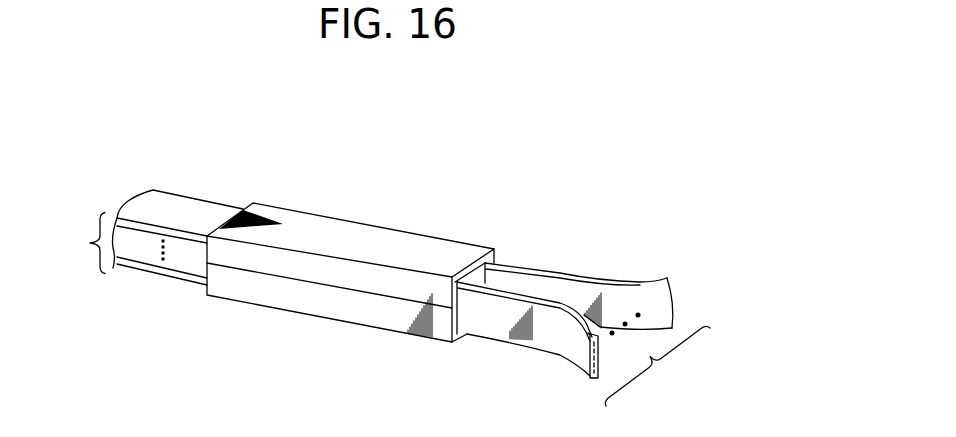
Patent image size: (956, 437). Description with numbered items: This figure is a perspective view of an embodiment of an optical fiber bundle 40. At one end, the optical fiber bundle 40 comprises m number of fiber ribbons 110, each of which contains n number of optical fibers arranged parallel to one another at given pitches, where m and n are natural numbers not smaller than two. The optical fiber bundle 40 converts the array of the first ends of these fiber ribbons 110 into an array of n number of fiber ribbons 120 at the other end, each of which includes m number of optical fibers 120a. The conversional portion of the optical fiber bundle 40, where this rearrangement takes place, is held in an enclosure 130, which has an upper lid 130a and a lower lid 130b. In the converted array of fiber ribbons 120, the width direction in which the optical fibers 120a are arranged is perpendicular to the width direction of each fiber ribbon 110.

The optical fiber bundle 40 is at (328, 193).
The fiber ribbons 110 is at (185, 213).
The fiber ribbons 120 is at (552, 294).
The optical fibers 120a is at (585, 344).
The enclosure 130 is at (350, 254).
The upper lid 130a is at (398, 240).
The lower lid 130b is at (302, 302).